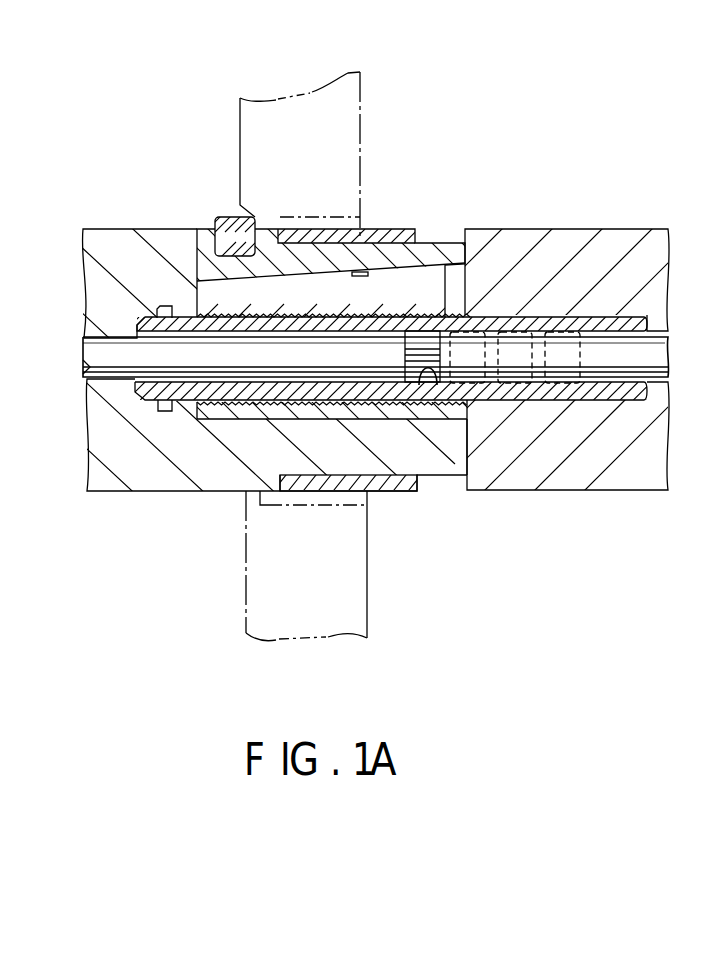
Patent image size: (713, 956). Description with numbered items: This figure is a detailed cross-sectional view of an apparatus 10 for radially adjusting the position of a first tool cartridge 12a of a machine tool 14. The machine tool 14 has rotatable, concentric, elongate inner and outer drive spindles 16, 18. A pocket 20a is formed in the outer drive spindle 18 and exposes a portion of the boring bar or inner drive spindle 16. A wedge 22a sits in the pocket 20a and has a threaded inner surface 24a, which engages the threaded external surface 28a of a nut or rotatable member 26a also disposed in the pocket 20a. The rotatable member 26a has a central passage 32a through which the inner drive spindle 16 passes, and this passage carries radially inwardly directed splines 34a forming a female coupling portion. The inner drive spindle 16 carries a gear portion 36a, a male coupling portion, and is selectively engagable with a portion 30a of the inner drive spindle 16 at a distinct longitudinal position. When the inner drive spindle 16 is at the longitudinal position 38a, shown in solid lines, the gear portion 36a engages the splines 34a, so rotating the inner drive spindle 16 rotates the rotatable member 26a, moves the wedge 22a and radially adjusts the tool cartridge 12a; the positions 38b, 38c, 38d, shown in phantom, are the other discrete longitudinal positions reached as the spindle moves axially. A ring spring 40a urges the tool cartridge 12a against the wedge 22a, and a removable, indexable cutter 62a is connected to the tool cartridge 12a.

The apparatus 10 is at (547, 53).
The machine tool 14 is at (165, 120).
The outer drive spindle 18 is at (104, 252).
The inner drive spindle 16 is at (113, 345).
The tool cartridge 12a is at (197, 229).
The wedge 22a is at (419, 290).
The threaded inner surface 24a is at (285, 315).
The cutter 62a is at (221, 217).
The longitudinal position 38a is at (407, 358).
The longitudinal position 38b is at (490, 380).
The longitudinal position 38c is at (537, 380).
The longitudinal position 38d is at (587, 380).
The pocket 20a is at (468, 293).
The central passage 32a is at (186, 368).
The rotatable member 26a is at (223, 385).
The portion of the inner drive spindle 30a is at (265, 375).
The threaded external surface 28a is at (370, 380).
The splines 34a is at (437, 386).
The ring spring 40a is at (312, 480).
The gear portion 36a is at (400, 370).